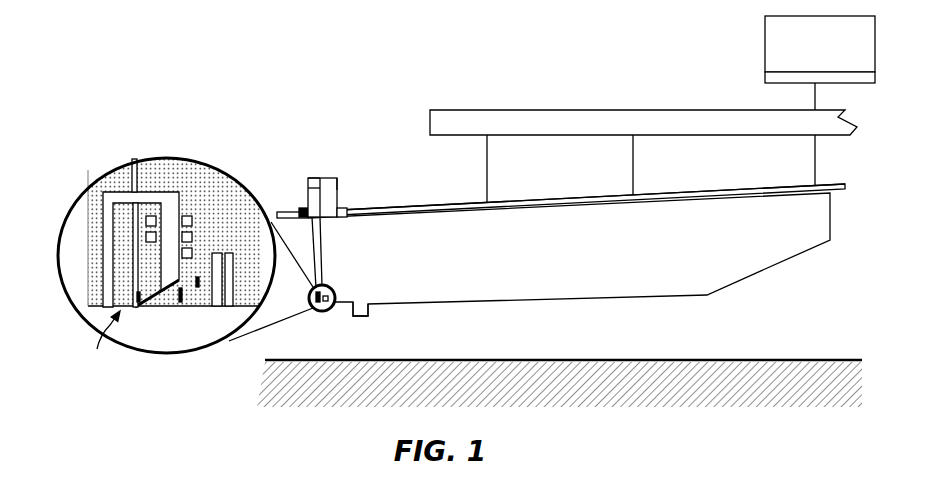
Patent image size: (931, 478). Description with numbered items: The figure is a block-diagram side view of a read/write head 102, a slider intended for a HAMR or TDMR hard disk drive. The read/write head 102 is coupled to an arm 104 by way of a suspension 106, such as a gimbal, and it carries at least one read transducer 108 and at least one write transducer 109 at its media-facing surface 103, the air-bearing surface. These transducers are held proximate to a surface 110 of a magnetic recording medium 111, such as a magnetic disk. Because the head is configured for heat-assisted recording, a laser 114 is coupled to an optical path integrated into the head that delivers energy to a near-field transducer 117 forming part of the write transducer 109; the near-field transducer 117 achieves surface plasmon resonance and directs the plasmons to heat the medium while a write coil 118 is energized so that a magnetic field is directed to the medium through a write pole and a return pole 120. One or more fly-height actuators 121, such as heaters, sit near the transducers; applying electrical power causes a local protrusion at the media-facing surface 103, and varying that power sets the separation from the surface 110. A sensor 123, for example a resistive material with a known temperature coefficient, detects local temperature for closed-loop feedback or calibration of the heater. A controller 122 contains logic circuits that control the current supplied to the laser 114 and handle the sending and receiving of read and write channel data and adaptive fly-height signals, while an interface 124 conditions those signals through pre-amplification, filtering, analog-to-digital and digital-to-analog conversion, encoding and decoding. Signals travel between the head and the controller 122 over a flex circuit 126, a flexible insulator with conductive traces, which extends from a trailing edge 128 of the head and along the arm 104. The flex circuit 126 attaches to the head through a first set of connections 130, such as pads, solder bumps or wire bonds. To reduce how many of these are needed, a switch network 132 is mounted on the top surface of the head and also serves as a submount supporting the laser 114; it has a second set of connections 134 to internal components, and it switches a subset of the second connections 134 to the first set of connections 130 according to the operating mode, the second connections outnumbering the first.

The read/write head 102 is at (633, 296).
The media-facing surface 103 is at (360, 317).
The arm 104 is at (527, 113).
The suspension 106 is at (633, 193).
The read transducer 108 is at (200, 300).
The write transducer 109 is at (100, 342).
The surface of the magnetic recording medium 110 is at (845, 358).
The magnetic recording medium 111 is at (712, 408).
The laser 114 is at (322, 178).
The near-field transducer 117 is at (137, 308).
The write coil 118 is at (185, 215).
The return pole 120 is at (88, 288).
The fly-height actuator 121 is at (202, 225).
The controller 122 is at (763, 47).
The sensor 123 is at (182, 308).
The interface 124 is at (763, 78).
The flex circuit 126 is at (421, 206).
The trailing edge 128 is at (278, 211).
The first set of connections 130 is at (308, 178).
The switch network 132 is at (338, 182).
The second set of connections 134 is at (346, 208).